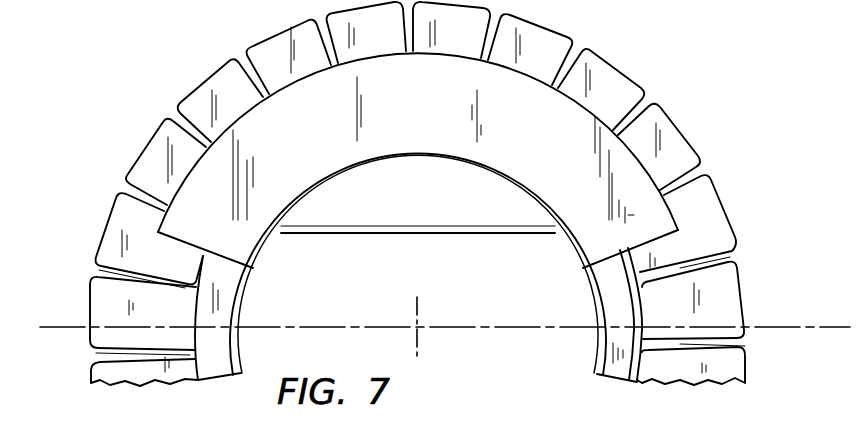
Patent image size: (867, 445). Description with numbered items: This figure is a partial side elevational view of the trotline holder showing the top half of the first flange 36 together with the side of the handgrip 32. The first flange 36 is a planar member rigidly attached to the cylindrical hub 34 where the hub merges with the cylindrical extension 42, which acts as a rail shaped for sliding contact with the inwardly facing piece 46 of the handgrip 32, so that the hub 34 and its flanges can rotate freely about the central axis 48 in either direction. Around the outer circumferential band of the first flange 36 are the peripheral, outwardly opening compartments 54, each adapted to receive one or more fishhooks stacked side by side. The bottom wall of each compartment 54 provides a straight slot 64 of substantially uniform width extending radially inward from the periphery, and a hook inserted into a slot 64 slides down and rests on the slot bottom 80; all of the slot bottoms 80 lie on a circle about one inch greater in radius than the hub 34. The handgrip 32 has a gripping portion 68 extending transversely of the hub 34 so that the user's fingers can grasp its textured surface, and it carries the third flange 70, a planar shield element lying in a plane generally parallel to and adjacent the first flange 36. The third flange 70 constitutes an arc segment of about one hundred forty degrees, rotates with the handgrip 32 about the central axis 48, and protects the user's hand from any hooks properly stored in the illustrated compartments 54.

The handgrip 32 is at (381, 252).
The hub 34 is at (240, 295).
The first flange 36 is at (143, 139).
The cylindrical extension 42 is at (233, 318).
The inwardly facing piece 46 is at (584, 270).
The central axis 48 is at (418, 328).
The compartment 54 is at (158, 171).
The slot 64 is at (94, 362).
The gripping portion 68 is at (471, 236).
The third flange 70 is at (629, 182).
The slot bottom 80 is at (162, 284).